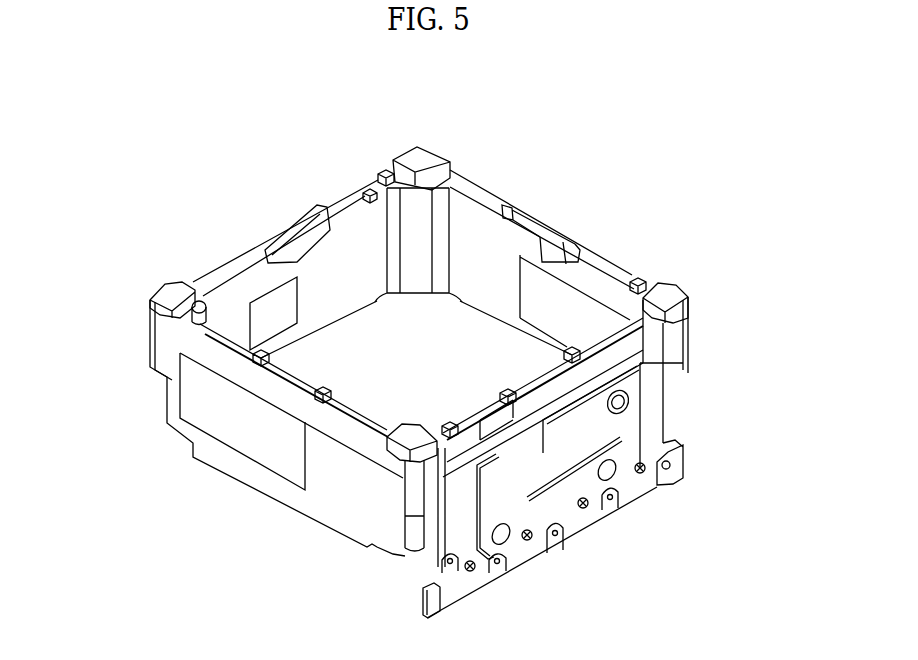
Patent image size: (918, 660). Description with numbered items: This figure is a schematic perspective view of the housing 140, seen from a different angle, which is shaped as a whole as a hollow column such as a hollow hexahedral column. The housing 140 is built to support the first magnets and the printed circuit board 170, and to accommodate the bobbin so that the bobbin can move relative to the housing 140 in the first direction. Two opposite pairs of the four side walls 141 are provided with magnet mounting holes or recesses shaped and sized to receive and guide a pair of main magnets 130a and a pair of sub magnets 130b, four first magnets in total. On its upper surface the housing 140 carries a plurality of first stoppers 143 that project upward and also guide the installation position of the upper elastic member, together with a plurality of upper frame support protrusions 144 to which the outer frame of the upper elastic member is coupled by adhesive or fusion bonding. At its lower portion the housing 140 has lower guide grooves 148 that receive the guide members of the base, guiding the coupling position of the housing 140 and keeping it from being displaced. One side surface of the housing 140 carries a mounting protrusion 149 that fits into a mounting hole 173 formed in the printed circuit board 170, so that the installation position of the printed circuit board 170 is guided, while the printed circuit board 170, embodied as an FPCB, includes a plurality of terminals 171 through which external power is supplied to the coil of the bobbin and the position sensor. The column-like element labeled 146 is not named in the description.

The housing 140 is at (585, 201).
The side wall 141 is at (641, 364).
The first stopper 143 is at (415, 148).
The upper frame support protrusion 144 is at (380, 172).
The column 146 is at (420, 200).
The lower guide groove 148 is at (401, 550).
The mounting protrusion 149 is at (622, 402).
The main magnet 130a is at (573, 302).
The sub magnet 130b is at (266, 303).
The printed circuit board 170 is at (587, 523).
The terminal 171 is at (553, 537).
The mounting hole 173 is at (620, 416).